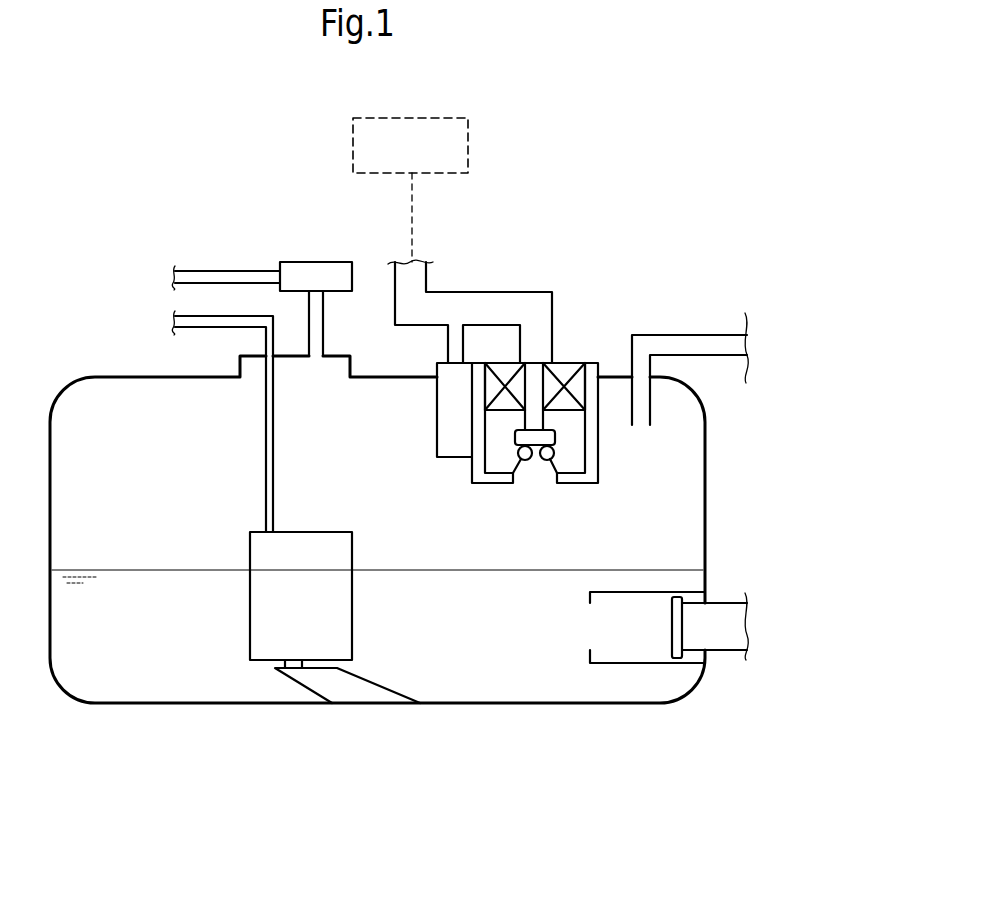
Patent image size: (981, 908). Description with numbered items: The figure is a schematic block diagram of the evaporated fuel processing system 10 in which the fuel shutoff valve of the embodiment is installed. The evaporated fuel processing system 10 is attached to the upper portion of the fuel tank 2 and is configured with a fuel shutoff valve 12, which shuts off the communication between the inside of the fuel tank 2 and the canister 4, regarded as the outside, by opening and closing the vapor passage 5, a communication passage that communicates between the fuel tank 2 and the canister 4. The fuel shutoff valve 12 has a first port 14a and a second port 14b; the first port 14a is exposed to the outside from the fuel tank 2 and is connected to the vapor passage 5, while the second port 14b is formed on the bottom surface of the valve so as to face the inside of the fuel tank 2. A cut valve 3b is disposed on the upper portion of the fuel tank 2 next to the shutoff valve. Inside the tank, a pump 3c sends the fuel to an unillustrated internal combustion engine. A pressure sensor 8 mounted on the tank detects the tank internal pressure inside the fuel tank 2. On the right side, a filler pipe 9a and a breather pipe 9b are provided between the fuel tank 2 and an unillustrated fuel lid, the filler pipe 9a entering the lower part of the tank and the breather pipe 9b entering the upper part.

The fuel tank 2 is at (137, 705).
The cut valve 3b is at (453, 447).
The pump 3c is at (265, 645).
The canister 4 is at (468, 145).
The vapor passage 5 is at (418, 283).
The pressure sensor 8 is at (313, 268).
The filler pipe 9a is at (718, 650).
The breather pipe 9b is at (712, 345).
The evaporated fuel processing system 10 is at (655, 163).
The fuel shutoff valve 12 is at (615, 425).
The first port 14a is at (533, 362).
The second port 14b is at (600, 452).